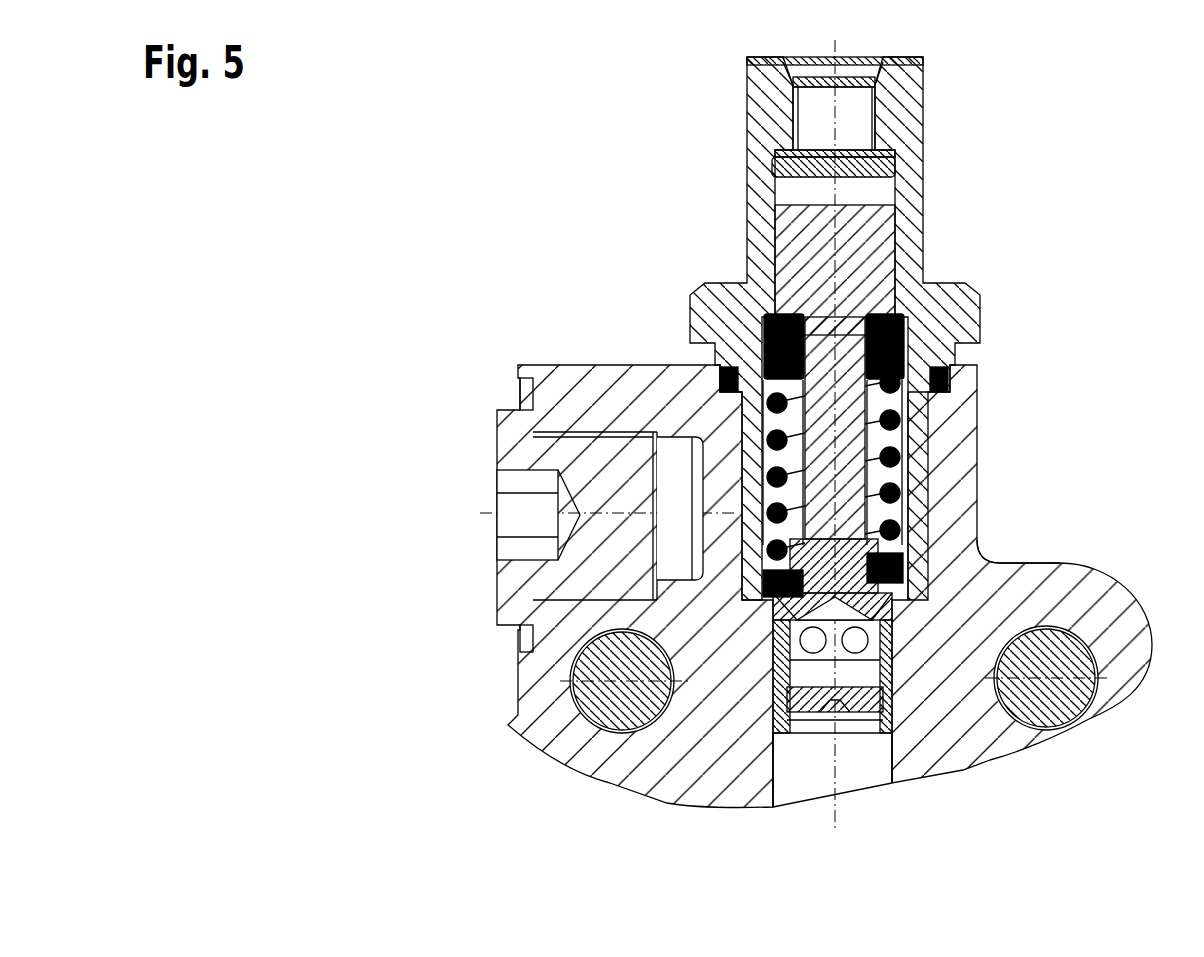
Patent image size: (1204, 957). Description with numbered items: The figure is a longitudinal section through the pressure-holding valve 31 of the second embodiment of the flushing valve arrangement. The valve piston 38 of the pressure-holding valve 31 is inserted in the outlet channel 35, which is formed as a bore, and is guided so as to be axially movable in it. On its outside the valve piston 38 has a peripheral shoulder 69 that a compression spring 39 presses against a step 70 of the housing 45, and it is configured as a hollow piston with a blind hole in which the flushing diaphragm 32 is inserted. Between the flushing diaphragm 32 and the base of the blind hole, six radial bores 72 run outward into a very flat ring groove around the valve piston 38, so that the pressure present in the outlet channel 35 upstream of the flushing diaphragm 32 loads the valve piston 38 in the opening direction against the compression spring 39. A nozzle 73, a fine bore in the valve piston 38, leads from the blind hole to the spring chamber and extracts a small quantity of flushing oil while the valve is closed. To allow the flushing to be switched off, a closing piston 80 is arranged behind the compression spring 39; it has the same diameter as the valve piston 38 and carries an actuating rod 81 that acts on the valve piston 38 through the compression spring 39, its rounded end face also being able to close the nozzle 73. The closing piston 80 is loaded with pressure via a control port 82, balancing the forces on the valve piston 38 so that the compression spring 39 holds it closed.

The pressure-holding valve 31 is at (1003, 530).
The flushing diaphragm 32 is at (870, 702).
The outlet channel 35 is at (806, 787).
The valve piston 38 is at (785, 675).
The compression spring 39 is at (867, 447).
The housing 45 is at (1113, 610).
The peripheral shoulder 69 is at (765, 586).
The step 70 is at (781, 616).
The radial bores 72 is at (880, 640).
The nozzle 73 is at (990, 562).
The closing piston 80 is at (862, 250).
The actuating rod 81 is at (853, 420).
The control port 82 is at (863, 112).